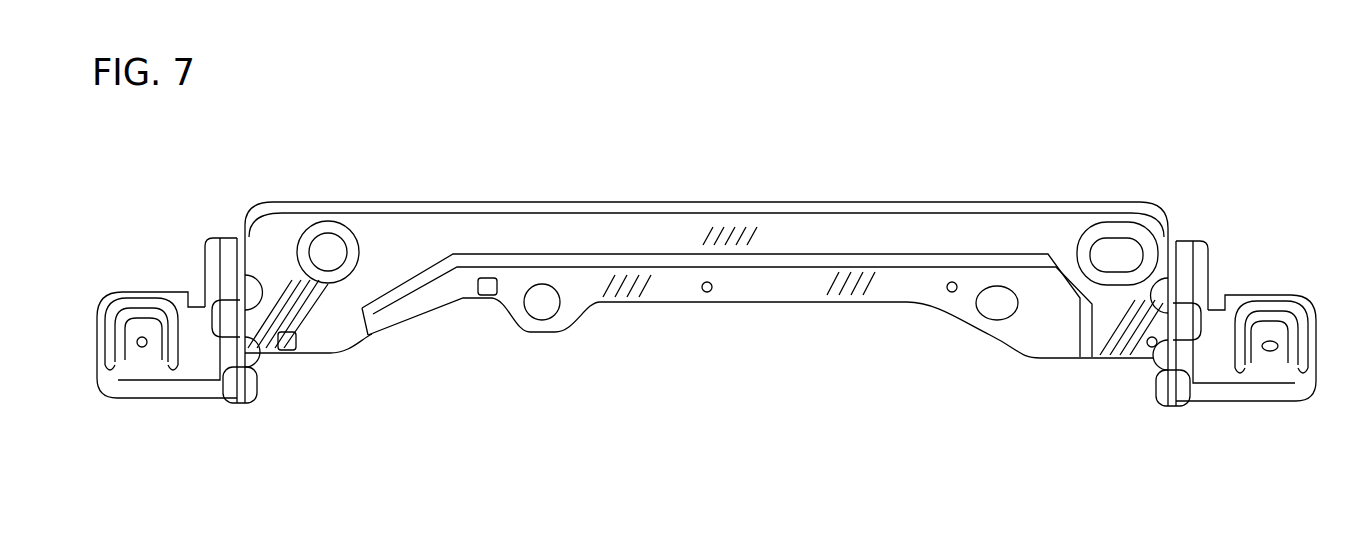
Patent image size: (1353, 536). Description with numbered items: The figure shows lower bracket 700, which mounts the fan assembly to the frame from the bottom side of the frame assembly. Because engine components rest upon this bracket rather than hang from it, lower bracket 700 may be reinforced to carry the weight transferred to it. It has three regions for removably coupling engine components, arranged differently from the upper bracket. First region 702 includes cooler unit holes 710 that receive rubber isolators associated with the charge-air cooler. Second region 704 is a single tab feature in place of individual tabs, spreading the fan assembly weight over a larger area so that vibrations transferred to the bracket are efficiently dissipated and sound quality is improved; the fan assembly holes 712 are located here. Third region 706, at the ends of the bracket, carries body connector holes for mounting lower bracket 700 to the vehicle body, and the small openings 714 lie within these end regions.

The lower bracket 700 is at (378, 100).
The first region 702 is at (832, 210).
The second region 704 is at (760, 288).
The third region 706 is at (103, 303).
The cooler unit holes 710 is at (328, 250).
The fan assembly holes 712 is at (545, 305).
The fastener opening 714 is at (142, 340).